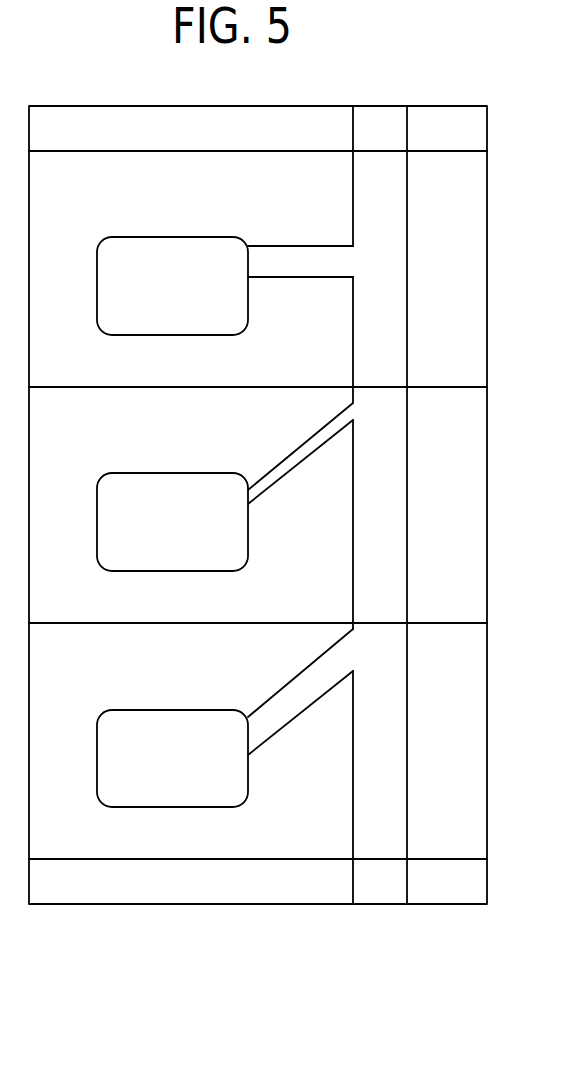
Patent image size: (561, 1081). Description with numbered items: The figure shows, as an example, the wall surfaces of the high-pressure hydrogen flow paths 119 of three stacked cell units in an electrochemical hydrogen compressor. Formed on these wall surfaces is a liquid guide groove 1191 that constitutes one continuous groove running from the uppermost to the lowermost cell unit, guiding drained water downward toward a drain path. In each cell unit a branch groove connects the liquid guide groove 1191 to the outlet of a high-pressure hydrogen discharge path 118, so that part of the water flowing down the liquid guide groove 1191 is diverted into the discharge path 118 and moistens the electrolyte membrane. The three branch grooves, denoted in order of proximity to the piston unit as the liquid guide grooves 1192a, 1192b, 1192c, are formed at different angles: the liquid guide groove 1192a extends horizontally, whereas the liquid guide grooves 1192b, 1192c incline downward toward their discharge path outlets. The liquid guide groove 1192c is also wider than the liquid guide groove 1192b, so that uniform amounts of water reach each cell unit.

The high-pressure hydrogen discharge path 118 is at (167, 250).
The high-pressure hydrogen flow path 119 is at (205, 888).
The liquid guide groove 1191 is at (367, 888).
The liquid guide groove 1192a is at (285, 255).
The liquid guide groove 1192b is at (270, 482).
The liquid guide groove 1192c is at (272, 707).